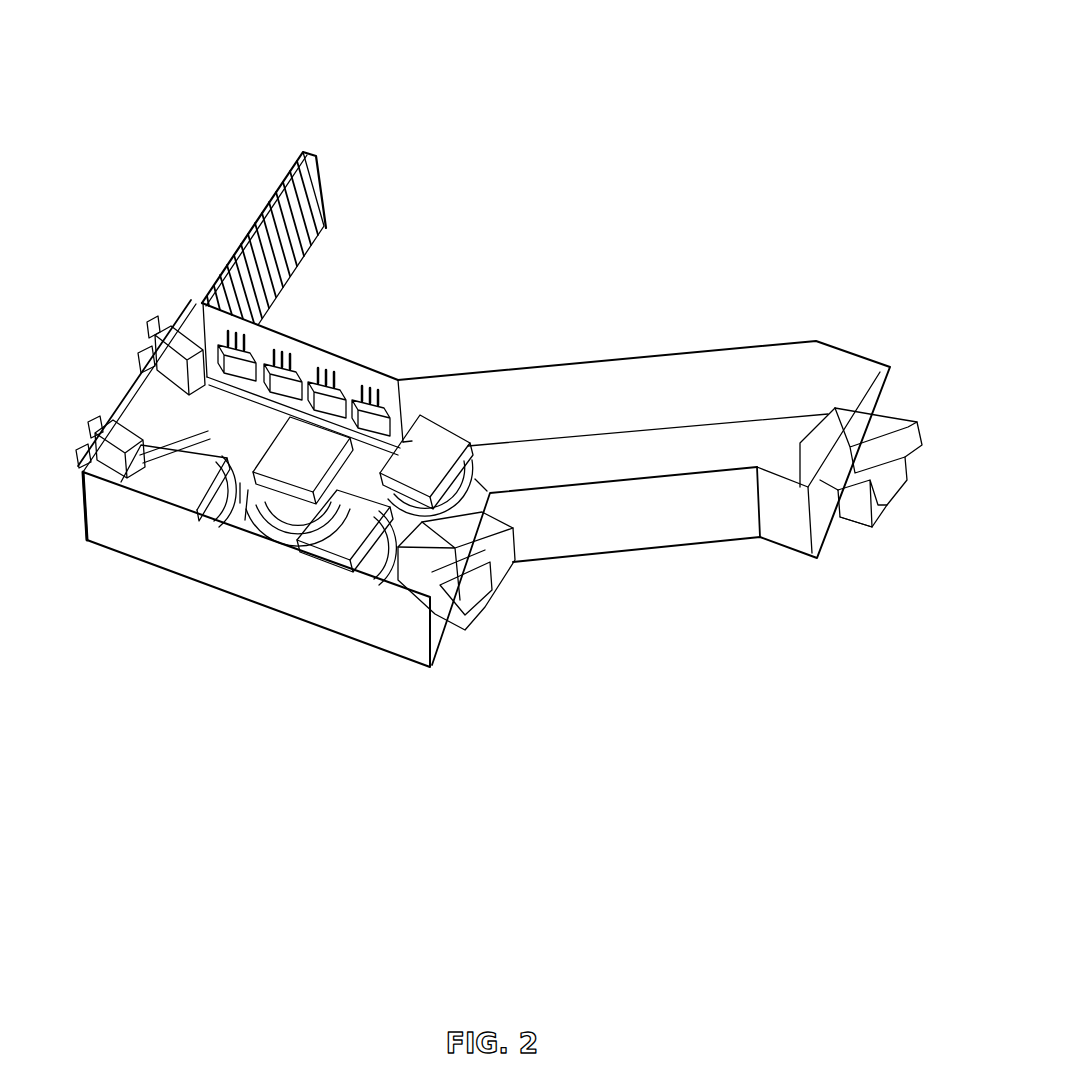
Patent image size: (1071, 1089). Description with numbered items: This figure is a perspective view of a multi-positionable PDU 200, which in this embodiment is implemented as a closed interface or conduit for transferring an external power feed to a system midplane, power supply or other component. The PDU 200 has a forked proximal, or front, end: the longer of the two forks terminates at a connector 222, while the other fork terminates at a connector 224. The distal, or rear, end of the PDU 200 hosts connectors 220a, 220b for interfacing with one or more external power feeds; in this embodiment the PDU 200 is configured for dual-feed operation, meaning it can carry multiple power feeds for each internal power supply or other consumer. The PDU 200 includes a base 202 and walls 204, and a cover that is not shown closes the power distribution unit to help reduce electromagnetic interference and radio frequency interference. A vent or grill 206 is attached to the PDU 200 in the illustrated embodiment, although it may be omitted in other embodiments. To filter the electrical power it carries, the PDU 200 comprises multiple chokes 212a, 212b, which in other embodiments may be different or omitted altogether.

The multi-positionable PDU 200 is at (622, 179).
The base 202 is at (676, 445).
The walls 204 is at (555, 393).
The grill 206 is at (322, 183).
The choke 212a is at (231, 468).
The choke 212b is at (362, 566).
The connector 220a is at (156, 334).
The connector 220b is at (70, 458).
The connector 222 is at (894, 508).
The connector 224 is at (500, 578).